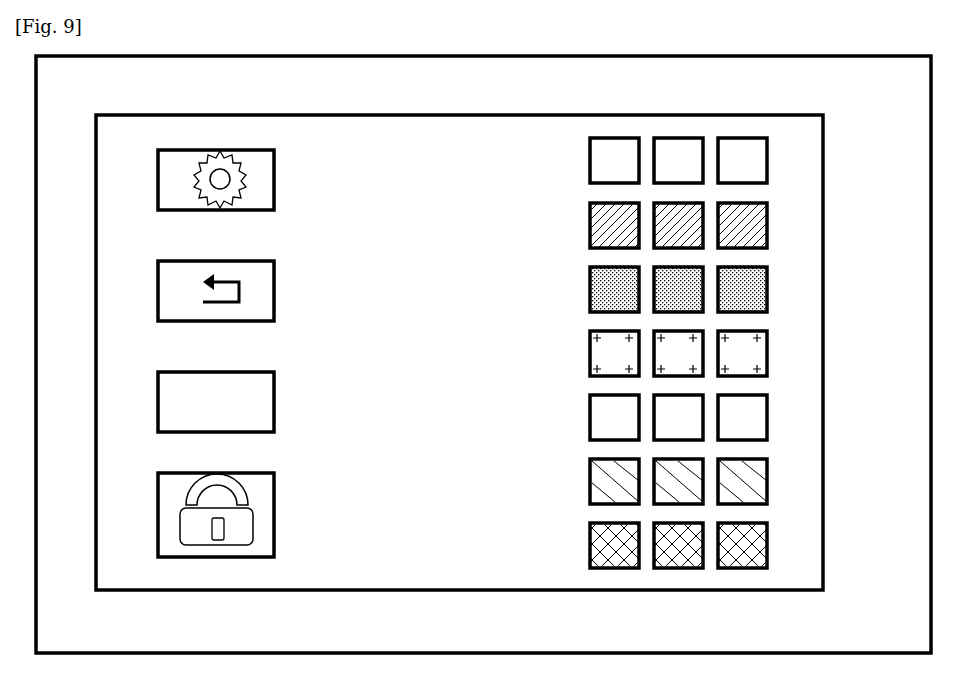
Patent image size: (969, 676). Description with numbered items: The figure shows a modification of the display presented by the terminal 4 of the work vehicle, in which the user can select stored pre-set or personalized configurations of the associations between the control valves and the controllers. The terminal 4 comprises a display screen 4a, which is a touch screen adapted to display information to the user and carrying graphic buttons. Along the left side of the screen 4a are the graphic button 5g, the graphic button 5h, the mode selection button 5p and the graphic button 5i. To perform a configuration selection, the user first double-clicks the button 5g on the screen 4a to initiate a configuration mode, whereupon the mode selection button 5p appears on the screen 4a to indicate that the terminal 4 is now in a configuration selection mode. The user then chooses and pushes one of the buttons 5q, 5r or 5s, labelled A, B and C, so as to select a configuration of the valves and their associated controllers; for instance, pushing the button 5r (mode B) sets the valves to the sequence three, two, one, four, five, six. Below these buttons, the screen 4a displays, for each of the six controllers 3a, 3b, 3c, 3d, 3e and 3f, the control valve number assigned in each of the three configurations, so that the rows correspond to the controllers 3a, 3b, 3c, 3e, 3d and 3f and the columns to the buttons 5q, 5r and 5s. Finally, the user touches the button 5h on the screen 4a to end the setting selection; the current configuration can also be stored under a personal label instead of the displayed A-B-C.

The terminal 4 is at (64, 89).
The display screen 4a is at (137, 149).
The graphic button 5g is at (270, 165).
The graphic button 5h is at (262, 283).
The mode selection button 5p is at (262, 393).
The graphic button 5i is at (268, 508).
The configuration selection button 5q is at (626, 147).
The configuration selection button 5r is at (688, 147).
The configuration selection button 5s is at (752, 147).
The controller 3a is at (590, 222).
The controller 3b is at (590, 286).
The controller 3c is at (590, 350).
The controller 3e is at (590, 414).
The controller 3d is at (590, 478).
The controller 3f is at (590, 542).